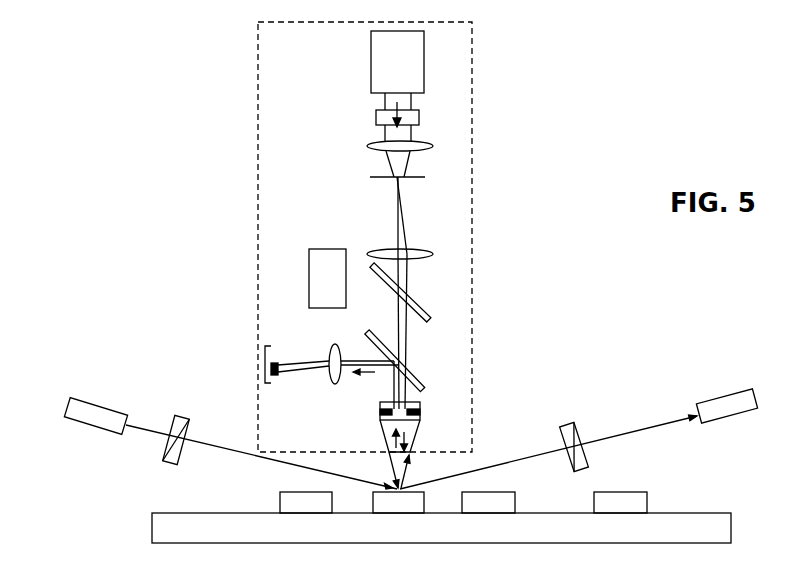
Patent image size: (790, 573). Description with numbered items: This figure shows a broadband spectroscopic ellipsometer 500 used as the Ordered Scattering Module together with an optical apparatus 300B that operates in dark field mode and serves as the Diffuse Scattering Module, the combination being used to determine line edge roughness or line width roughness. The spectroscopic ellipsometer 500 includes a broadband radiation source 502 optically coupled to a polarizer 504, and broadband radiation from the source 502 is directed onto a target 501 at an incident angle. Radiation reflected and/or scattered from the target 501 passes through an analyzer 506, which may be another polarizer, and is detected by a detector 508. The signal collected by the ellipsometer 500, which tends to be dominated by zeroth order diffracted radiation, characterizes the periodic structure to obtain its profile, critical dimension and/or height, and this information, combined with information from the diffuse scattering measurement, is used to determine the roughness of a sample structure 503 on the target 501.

The optical apparatus 300B is at (472, 178).
The broadband spectroscopic ellipsometer 500 is at (615, 380).
The target 501 is at (152, 530).
The broadband radiation source 502 is at (72, 408).
The sample structure 503 is at (259, 500).
The polarizer 504 is at (162, 455).
The analyzer 506 is at (586, 455).
The detector 508 is at (715, 418).